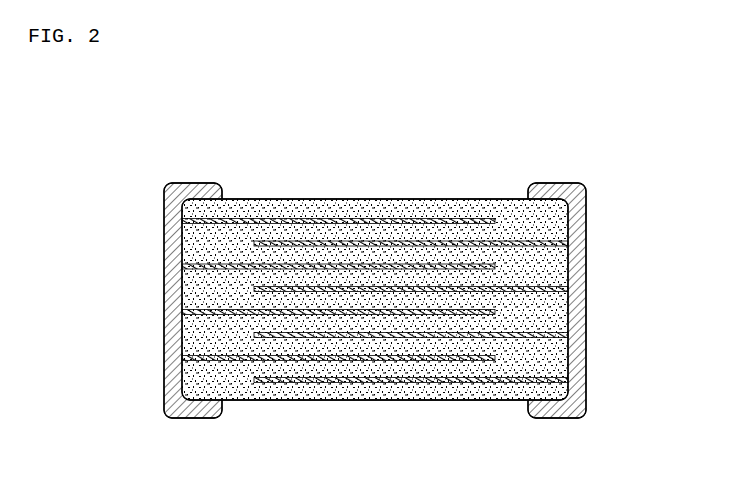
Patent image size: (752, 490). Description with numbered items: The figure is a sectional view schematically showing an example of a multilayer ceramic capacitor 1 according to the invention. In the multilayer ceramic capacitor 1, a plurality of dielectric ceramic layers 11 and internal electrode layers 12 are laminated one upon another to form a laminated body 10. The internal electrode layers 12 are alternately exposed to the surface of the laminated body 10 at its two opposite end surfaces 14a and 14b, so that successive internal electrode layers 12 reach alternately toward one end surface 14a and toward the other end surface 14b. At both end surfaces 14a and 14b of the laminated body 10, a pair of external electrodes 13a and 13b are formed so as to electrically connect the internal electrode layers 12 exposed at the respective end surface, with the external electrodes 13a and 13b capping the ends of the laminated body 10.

The multilayer ceramic capacitor 1 is at (194, 130).
The laminated body 10 is at (491, 197).
The dielectric ceramic layers 11 is at (410, 255).
The internal electrode layers 12 is at (238, 267).
The external electrode 13a is at (172, 252).
The external electrode 13b is at (582, 257).
The end surface 14a is at (172, 338).
The end surface 14b is at (573, 305).